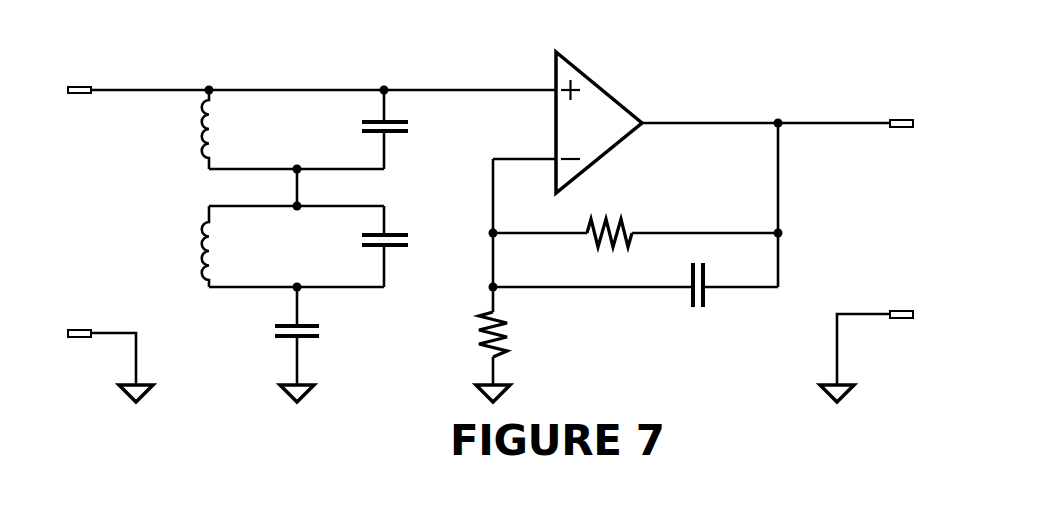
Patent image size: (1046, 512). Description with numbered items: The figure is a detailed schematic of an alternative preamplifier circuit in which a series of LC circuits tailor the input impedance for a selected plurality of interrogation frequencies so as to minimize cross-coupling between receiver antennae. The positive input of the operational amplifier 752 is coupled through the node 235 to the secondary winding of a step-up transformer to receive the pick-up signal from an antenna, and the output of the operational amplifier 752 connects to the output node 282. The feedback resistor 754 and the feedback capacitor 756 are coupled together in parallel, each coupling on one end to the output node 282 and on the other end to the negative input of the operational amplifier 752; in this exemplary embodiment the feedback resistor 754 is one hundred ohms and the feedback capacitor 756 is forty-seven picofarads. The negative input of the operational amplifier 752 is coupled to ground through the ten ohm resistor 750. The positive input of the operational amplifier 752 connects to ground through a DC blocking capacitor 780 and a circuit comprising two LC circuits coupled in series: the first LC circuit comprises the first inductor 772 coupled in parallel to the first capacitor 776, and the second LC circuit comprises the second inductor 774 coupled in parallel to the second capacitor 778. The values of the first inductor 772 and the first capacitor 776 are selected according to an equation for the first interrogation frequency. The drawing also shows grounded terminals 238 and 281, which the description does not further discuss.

The node 235 is at (80, 86).
The ground terminal 238 is at (75, 328).
The ground terminal 281 is at (900, 310).
The output node 282 is at (900, 118).
The resistor R6 750 is at (468, 323).
The operational amplifier 752 is at (615, 102).
The resistor R2 754 is at (605, 250).
The capacitor C4 756 is at (697, 310).
The inductor L1 772 is at (190, 150).
The inductor L2 774 is at (192, 240).
The capacitor C1 776 is at (413, 127).
The capacitor C2 778 is at (413, 243).
The capacitor C3 780 is at (325, 331).